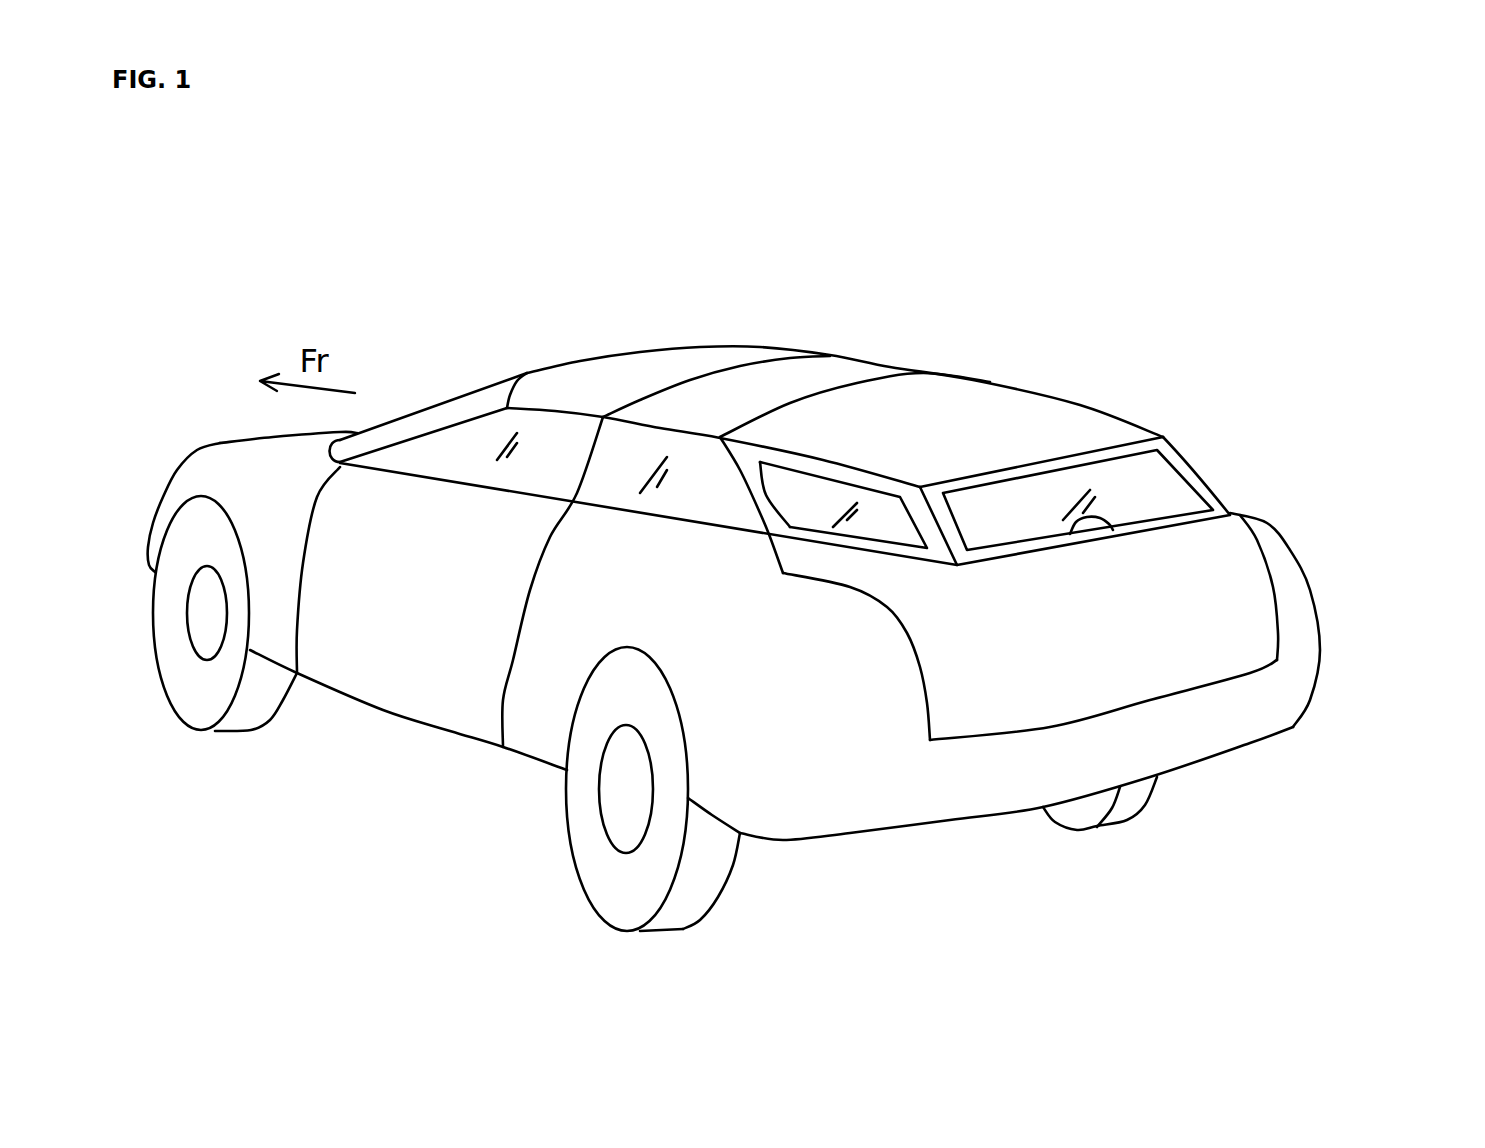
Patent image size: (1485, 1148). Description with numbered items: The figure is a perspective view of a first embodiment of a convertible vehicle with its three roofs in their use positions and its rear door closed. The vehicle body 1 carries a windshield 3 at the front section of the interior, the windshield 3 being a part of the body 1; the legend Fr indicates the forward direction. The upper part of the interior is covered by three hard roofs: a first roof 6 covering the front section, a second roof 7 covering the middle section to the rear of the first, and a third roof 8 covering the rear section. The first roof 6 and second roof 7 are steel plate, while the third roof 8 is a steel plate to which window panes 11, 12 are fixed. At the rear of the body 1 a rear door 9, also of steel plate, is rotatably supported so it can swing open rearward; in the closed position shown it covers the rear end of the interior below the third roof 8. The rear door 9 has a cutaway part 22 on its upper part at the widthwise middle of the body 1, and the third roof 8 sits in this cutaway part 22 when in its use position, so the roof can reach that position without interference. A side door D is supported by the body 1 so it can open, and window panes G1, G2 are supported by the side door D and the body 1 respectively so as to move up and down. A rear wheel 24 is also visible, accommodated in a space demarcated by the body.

The vehicle body 1 is at (1327, 631).
The windshield 3 is at (477, 405).
The first roof 6 is at (673, 363).
The second roof 7 is at (845, 368).
The third roof 8 is at (1030, 407).
The rear door 9 is at (1273, 570).
The window pane 11 is at (823, 497).
The window pane 12 is at (1145, 484).
The cutaway part 22 is at (1073, 540).
The rear wheel 24 is at (732, 873).
The side door D is at (413, 687).
The window pane G1 is at (458, 463).
The window pane G2 is at (677, 493).